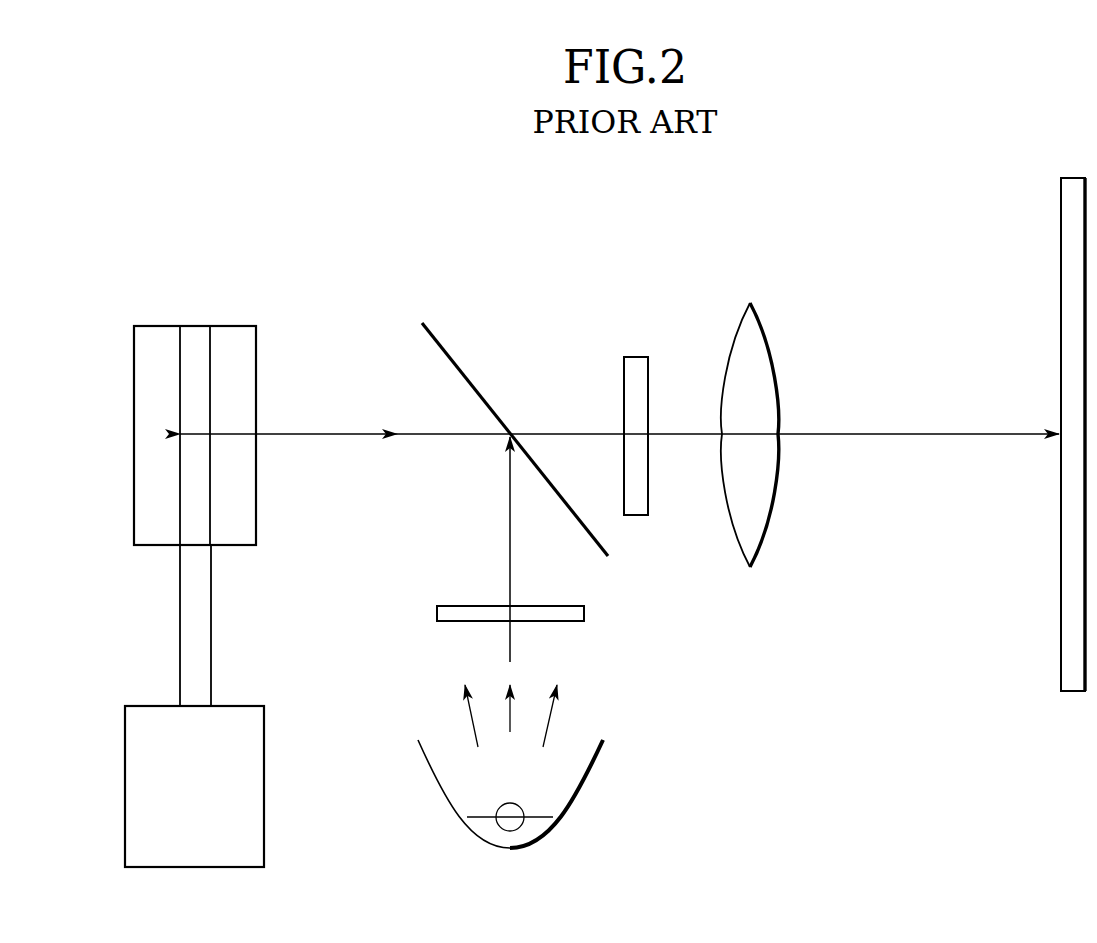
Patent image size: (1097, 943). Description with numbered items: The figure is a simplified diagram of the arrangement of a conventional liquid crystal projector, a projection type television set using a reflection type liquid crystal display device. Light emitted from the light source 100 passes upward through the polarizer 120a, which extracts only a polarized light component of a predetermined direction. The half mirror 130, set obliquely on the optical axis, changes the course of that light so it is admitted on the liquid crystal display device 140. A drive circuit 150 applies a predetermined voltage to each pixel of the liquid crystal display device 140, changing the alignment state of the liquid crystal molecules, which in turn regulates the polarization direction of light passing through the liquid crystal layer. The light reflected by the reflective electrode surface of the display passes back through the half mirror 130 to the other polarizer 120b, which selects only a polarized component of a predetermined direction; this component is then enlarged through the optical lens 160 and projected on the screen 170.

The light source 100 is at (584, 783).
The polarizer 120a is at (565, 622).
The polarizer 120b is at (632, 355).
The half mirror 130 is at (436, 338).
The liquid crystal display device 140 is at (231, 325).
The drive circuit 150 is at (264, 777).
The optical lens 160 is at (762, 330).
The screen 170 is at (1060, 203).